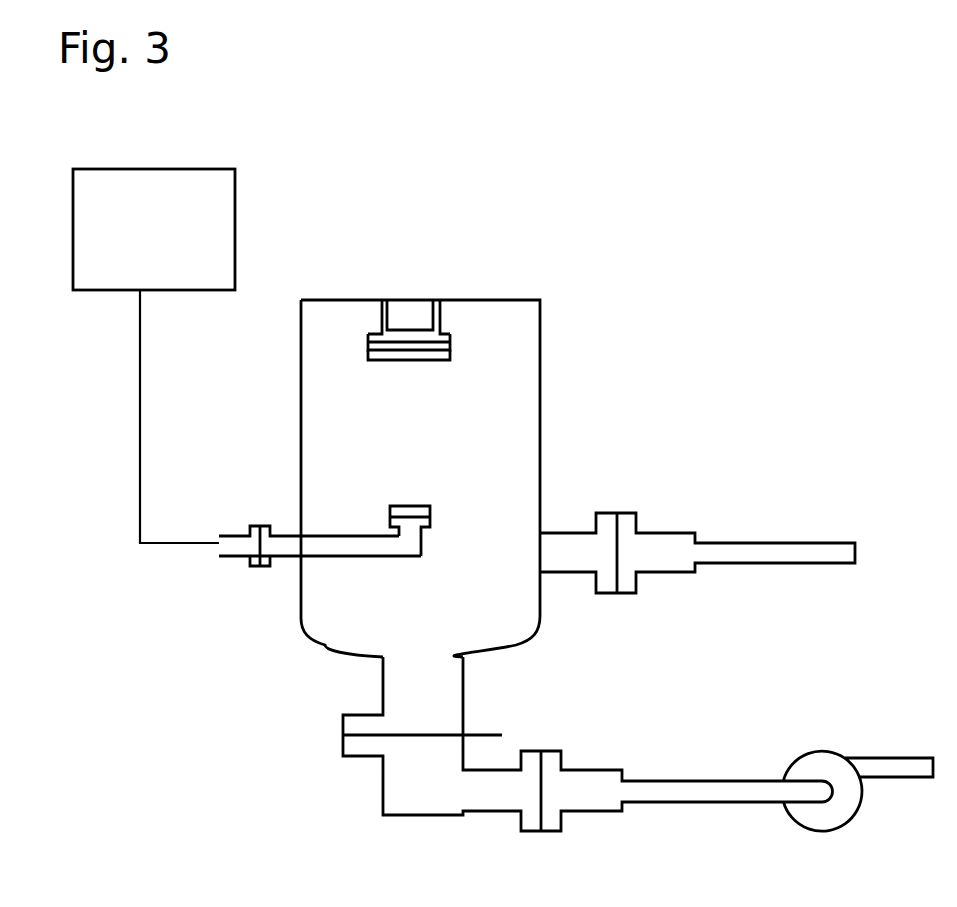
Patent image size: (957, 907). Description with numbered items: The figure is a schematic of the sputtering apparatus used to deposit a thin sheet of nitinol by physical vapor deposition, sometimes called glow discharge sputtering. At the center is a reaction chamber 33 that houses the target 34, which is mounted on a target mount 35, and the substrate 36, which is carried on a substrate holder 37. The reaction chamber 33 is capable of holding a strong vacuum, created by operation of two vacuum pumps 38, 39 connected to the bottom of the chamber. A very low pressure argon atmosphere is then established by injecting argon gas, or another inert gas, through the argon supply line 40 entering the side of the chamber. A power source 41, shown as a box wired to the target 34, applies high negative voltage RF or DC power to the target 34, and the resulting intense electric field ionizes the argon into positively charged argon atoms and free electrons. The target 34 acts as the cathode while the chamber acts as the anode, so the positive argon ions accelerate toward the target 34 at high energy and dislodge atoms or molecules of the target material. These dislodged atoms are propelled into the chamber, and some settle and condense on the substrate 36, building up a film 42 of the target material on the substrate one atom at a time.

The reaction chamber 33 is at (347, 655).
The target 34 is at (420, 506).
The target mount 35 is at (410, 557).
The substrate 36 is at (452, 343).
The substrate holder 37 is at (452, 333).
The vacuum pump 38 is at (378, 807).
The vacuum pump 39 is at (800, 828).
The argon supply line 40 is at (728, 542).
The power source 41 is at (208, 168).
The film 42 is at (452, 355).